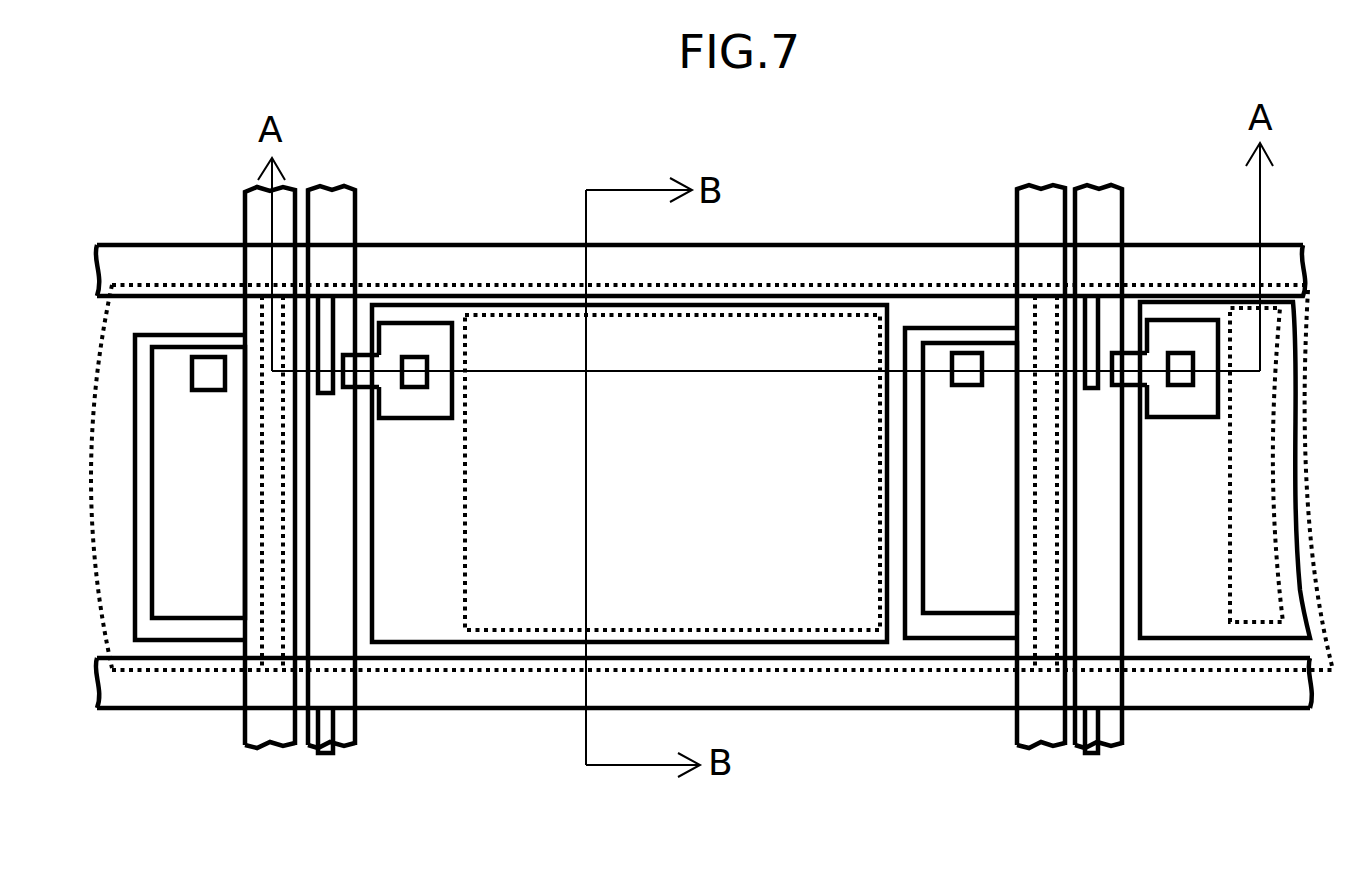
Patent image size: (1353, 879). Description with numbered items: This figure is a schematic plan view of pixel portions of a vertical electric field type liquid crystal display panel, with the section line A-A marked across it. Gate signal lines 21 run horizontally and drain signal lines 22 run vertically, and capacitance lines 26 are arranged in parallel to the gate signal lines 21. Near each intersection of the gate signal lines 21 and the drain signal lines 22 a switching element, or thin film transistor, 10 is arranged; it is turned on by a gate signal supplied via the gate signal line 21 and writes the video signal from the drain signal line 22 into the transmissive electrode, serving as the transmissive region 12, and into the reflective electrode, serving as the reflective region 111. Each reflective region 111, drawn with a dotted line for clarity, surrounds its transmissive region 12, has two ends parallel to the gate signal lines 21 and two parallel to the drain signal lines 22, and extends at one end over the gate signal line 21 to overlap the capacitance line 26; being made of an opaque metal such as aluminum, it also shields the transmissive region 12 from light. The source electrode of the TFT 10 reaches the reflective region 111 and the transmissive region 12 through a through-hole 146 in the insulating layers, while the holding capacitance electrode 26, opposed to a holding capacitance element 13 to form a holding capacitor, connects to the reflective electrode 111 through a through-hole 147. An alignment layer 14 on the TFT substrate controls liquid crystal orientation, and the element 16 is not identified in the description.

The switching element 10 is at (343, 353).
The transmissive region 12 is at (728, 607).
The holding capacitance element 13 is at (408, 340).
The alignment layer 14 is at (325, 307).
The storage capacitor electrode 16 is at (975, 562).
The gate signal line 21 is at (323, 220).
The drain signal line 22 is at (713, 257).
The capacitance line 26 is at (245, 220).
The reflective region 111 is at (443, 595).
The through-hole 146 is at (428, 357).
The through-hole 147 is at (965, 357).